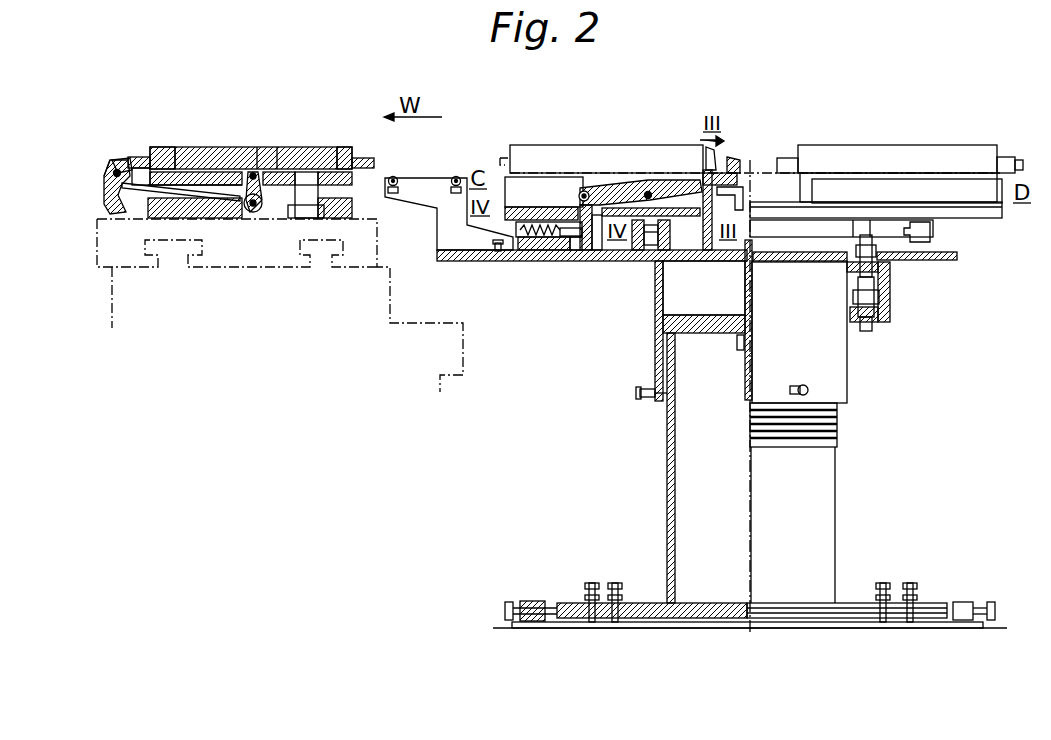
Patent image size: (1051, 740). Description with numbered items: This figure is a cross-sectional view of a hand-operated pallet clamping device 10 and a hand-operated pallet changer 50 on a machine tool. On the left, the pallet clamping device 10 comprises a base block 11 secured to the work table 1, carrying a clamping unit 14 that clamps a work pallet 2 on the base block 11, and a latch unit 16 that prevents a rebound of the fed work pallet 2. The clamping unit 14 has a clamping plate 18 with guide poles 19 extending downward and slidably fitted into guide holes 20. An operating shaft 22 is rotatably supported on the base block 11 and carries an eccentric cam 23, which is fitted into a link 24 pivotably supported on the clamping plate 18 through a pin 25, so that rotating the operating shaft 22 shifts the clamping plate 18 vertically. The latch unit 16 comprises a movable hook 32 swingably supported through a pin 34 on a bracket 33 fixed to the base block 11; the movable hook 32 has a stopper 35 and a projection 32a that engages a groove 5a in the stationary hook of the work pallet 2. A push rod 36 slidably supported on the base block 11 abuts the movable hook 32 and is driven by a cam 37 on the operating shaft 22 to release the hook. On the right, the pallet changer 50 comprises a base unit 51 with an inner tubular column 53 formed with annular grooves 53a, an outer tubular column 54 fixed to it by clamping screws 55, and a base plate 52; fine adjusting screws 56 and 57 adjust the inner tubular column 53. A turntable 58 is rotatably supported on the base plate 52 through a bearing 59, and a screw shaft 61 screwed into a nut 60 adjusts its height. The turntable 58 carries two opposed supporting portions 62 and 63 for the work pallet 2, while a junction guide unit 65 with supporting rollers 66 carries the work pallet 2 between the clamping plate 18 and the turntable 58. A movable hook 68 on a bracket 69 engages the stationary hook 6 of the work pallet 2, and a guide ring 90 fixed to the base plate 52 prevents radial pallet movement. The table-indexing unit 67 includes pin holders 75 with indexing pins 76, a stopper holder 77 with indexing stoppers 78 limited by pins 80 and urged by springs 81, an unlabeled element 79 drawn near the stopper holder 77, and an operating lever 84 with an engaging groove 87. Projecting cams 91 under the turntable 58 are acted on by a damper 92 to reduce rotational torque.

The work table 1 is at (380, 251).
The work pallet 2 is at (307, 147).
The groove 5a is at (161, 166).
The stationary hook 6 is at (363, 158).
The pallet clamping device 10 is at (236, 148).
The base block 11 is at (340, 220).
The clamping unit 14 is at (255, 172).
The latch unit 16 is at (104, 168).
The clamping plate 18 is at (344, 147).
The guide poles 19 is at (304, 218).
The guide holes 20 is at (290, 218).
The operating shaft 22 is at (245, 220).
The eccentric cam 23 is at (263, 211).
The link 24 is at (282, 147).
The pin 25 is at (197, 149).
The movable hook 32 is at (116, 158).
The projection 32a is at (146, 170).
The bracket 33 is at (106, 203).
The pin 34 is at (112, 174).
The stopper 35 is at (139, 157).
The push rod 36 is at (177, 218).
The cam 37 is at (232, 218).
The pallet changer 50 is at (916, 146).
The base unit 51 is at (844, 426).
The base plate 52 is at (639, 252).
The inner tubular column 53 is at (667, 462).
The annular grooves 53a is at (790, 448).
The outer tubular column 54 is at (655, 355).
The clamping screws 55 is at (640, 396).
The fine adjusting screws 56 is at (617, 582).
The fine adjusting screws 57 is at (509, 601).
The turntable 58 is at (523, 182).
The bearing 59 is at (655, 265).
The nut 60 is at (737, 344).
The screw shaft 61 is at (745, 384).
The supporting portion 62 is at (560, 147).
The supporting portion 63 is at (1000, 157).
The junction guide unit 65 is at (430, 178).
The supporting rollers 66 is at (393, 176).
The table-indexing unit 67 is at (579, 252).
The movable hook 68 is at (722, 159).
The bracket 69 is at (745, 190).
The pin holders 75 is at (858, 232).
The indexing pins 76 is at (935, 233).
The stopper holder 77 is at (520, 252).
The indexing stoppers 78 is at (560, 252).
The plunger 79 is at (545, 252).
The pins 80 is at (530, 252).
The springs 81 is at (498, 252).
The operating lever 84 is at (654, 186).
The engaging groove 87 is at (690, 262).
The guide ring 90 is at (800, 174).
The projecting cams 91 is at (862, 234).
The damper 92 is at (890, 298).